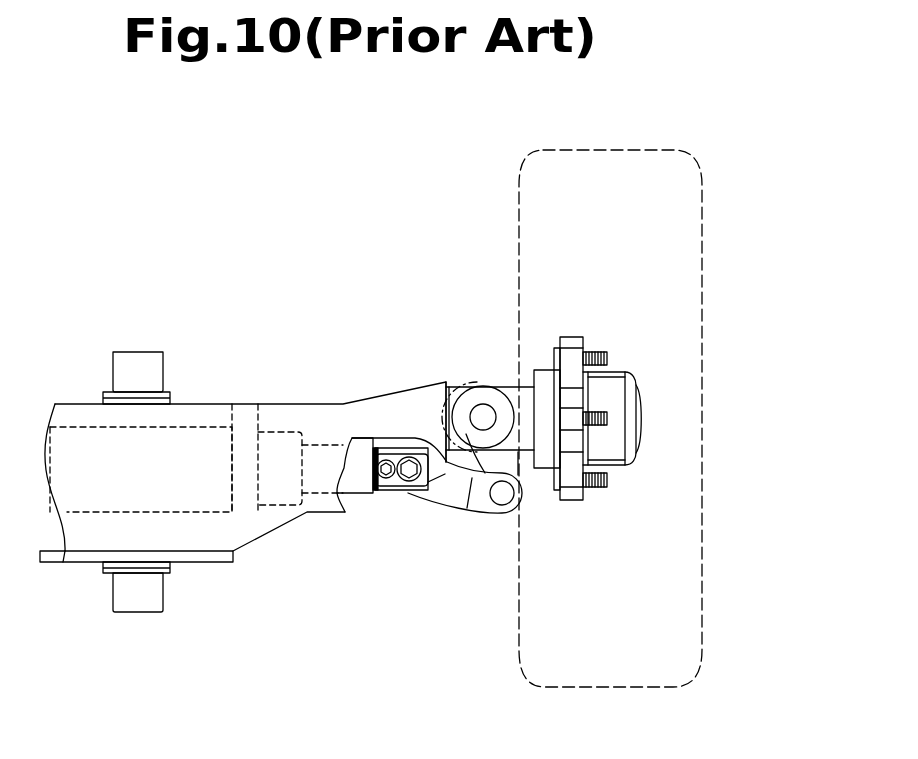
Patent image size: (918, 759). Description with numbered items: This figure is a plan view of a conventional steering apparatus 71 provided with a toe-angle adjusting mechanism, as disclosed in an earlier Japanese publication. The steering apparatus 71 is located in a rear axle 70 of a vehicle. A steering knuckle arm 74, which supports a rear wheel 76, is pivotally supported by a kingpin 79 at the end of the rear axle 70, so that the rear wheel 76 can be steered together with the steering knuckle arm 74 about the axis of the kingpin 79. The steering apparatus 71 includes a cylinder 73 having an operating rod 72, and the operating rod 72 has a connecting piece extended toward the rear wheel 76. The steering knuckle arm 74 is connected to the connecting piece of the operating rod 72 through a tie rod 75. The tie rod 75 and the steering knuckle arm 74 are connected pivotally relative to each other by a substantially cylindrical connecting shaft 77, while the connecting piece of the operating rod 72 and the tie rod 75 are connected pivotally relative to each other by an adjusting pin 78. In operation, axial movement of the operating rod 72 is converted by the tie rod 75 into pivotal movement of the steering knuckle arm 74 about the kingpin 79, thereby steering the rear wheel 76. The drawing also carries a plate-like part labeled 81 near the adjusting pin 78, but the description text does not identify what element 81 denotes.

The rear axle 70 is at (312, 410).
The steering apparatus 71 is at (422, 320).
The operating rod 72 is at (362, 488).
The cylinder 73 is at (68, 427).
The steering knuckle arm 74 is at (510, 392).
The tie rod 75 is at (485, 508).
The rear wheel 76 is at (603, 149).
The connecting shaft 77 is at (508, 493).
The adjusting pin 78 is at (411, 482).
The kingpin 79 is at (483, 417).
The plate 81 is at (392, 492).